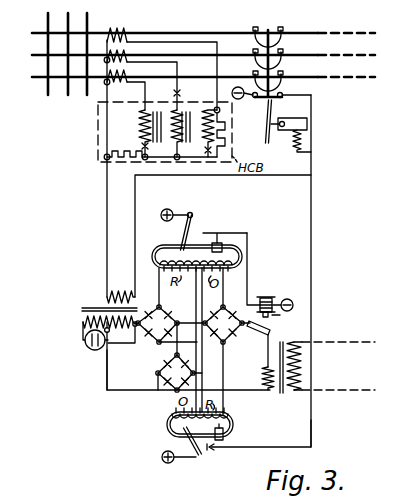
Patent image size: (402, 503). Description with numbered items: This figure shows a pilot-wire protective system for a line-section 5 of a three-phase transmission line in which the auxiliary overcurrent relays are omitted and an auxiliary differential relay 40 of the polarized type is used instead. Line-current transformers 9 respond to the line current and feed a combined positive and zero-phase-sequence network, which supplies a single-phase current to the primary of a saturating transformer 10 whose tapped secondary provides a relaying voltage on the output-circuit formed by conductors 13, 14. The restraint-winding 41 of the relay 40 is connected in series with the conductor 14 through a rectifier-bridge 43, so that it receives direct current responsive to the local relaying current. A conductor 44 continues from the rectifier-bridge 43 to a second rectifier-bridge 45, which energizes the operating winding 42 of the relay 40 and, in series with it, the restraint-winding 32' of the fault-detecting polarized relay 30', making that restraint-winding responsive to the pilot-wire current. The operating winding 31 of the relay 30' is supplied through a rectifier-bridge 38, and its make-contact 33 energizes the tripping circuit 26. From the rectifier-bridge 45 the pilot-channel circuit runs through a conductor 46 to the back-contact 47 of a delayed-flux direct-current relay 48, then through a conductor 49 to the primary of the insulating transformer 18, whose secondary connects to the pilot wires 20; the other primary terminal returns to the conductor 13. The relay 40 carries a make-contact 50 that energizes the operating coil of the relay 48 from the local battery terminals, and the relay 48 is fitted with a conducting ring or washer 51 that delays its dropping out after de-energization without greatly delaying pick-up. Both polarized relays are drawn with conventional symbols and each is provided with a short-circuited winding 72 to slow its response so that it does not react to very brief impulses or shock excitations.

The line-section 5 is at (293, 76).
The line-current transformers 9 is at (124, 24).
The saturating transformer 10 is at (89, 302).
The output-circuit conductor 13 is at (107, 374).
The output-circuit conductor 14 is at (142, 317).
The insulating transformer 18 is at (281, 395).
The pilot wires 20 is at (318, 342).
The tripping circuit 26 is at (312, 429).
The polarized relay 30' is at (215, 424).
The operating winding 31 is at (172, 414).
The restraint-winding 32' is at (243, 407).
The make-contact 33 is at (212, 458).
The rectifier-bridge 38 is at (161, 370).
The auxiliary differential relay 40 is at (162, 244).
The restraint-winding 41 is at (159, 279).
The operating winding 42 is at (223, 291).
The rectifier-bridge 43 is at (162, 311).
The conductor 44 is at (170, 321).
The rectifier-bridge 45 is at (231, 333).
The conductor 46 is at (244, 318).
The back-contact 47 is at (272, 332).
The delayed-flux direct-current relay 48 is at (262, 297).
The conductor 49 is at (266, 359).
The make-contact 50 is at (209, 236).
The conducting ring or washer 51 is at (280, 316).
The short-circuited winding 72 is at (224, 241).